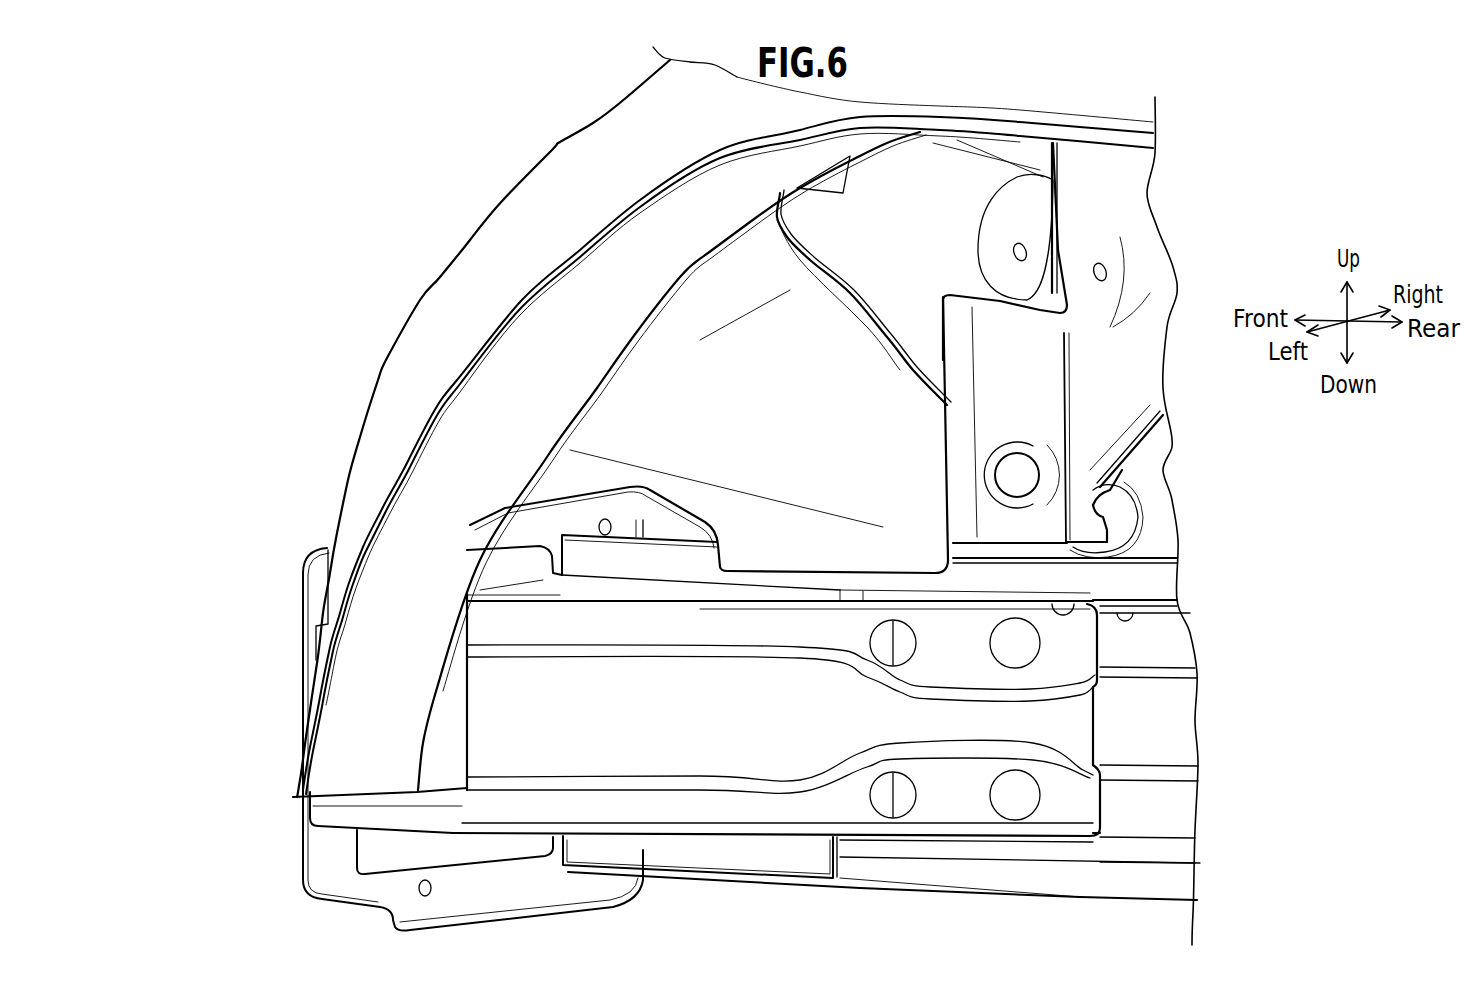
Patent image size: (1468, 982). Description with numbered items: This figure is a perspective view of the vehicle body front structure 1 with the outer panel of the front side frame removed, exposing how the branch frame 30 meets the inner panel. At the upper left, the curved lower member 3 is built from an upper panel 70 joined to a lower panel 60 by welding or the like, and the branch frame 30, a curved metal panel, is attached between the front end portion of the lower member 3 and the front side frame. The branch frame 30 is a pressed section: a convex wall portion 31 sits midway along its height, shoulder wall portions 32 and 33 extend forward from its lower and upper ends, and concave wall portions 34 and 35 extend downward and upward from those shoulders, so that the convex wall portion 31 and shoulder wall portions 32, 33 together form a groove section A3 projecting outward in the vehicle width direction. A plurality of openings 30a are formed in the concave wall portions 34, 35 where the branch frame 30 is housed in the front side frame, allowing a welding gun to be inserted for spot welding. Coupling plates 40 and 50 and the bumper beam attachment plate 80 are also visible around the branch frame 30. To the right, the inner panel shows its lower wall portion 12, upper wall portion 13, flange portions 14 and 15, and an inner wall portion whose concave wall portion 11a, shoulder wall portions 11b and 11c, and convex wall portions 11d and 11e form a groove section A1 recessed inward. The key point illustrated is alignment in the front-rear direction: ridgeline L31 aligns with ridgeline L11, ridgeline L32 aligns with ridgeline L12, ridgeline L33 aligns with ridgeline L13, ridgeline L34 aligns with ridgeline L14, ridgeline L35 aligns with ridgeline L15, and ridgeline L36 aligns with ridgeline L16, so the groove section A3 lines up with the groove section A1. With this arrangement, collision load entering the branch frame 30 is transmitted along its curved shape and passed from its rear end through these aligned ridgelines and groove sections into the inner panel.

The vehicle body front structure 1 is at (1213, 180).
The lower member 3 is at (272, 405).
The upper panel 70 is at (387, 418).
The lower panel 60 is at (407, 517).
The coupling plate 50 is at (540, 590).
The branch frame 30 is at (193, 658).
The concave wall portion 35 is at (470, 620).
The groove section A3 is at (250, 655).
The shoulder wall portion 33 is at (487, 650).
The convex wall portion 31 is at (487, 725).
The shoulder wall portion 32 is at (487, 780).
The concave wall portion 34 is at (327, 814).
The bumper beam attachment plate 80 is at (337, 873).
The coupling plate 40 is at (517, 850).
The ridgeline L34 is at (850, 662).
The ridgeline L36 is at (905, 665).
The ridgeline L35 is at (917, 757).
The ridgeline L33 is at (845, 762).
The openings 30a is at (903, 795).
The ridgeline L31 is at (1053, 817).
The ridgeline L11 is at (1130, 827).
The ridgeline L14 is at (1147, 683).
The ridgeline L13 is at (1110, 760).
The ridgeline L32 is at (1077, 615).
The ridgeline L12 is at (1133, 617).
The flange portion 15 is at (1160, 580).
The upper wall portion 13 is at (1180, 605).
The convex wall portion 11e is at (1178, 652).
The ridgeline L16 is at (1167, 677).
The shoulder wall portion 11c is at (1178, 688).
The groove section A1 is at (1283, 680).
The concave wall portion 11a is at (1183, 728).
The shoulder wall portion 11b is at (1177, 772).
The ridgeline L15 is at (1160, 780).
The convex wall portion 11d is at (1180, 816).
The lower wall portion 12 is at (1180, 855).
The flange portion 14 is at (1180, 890).